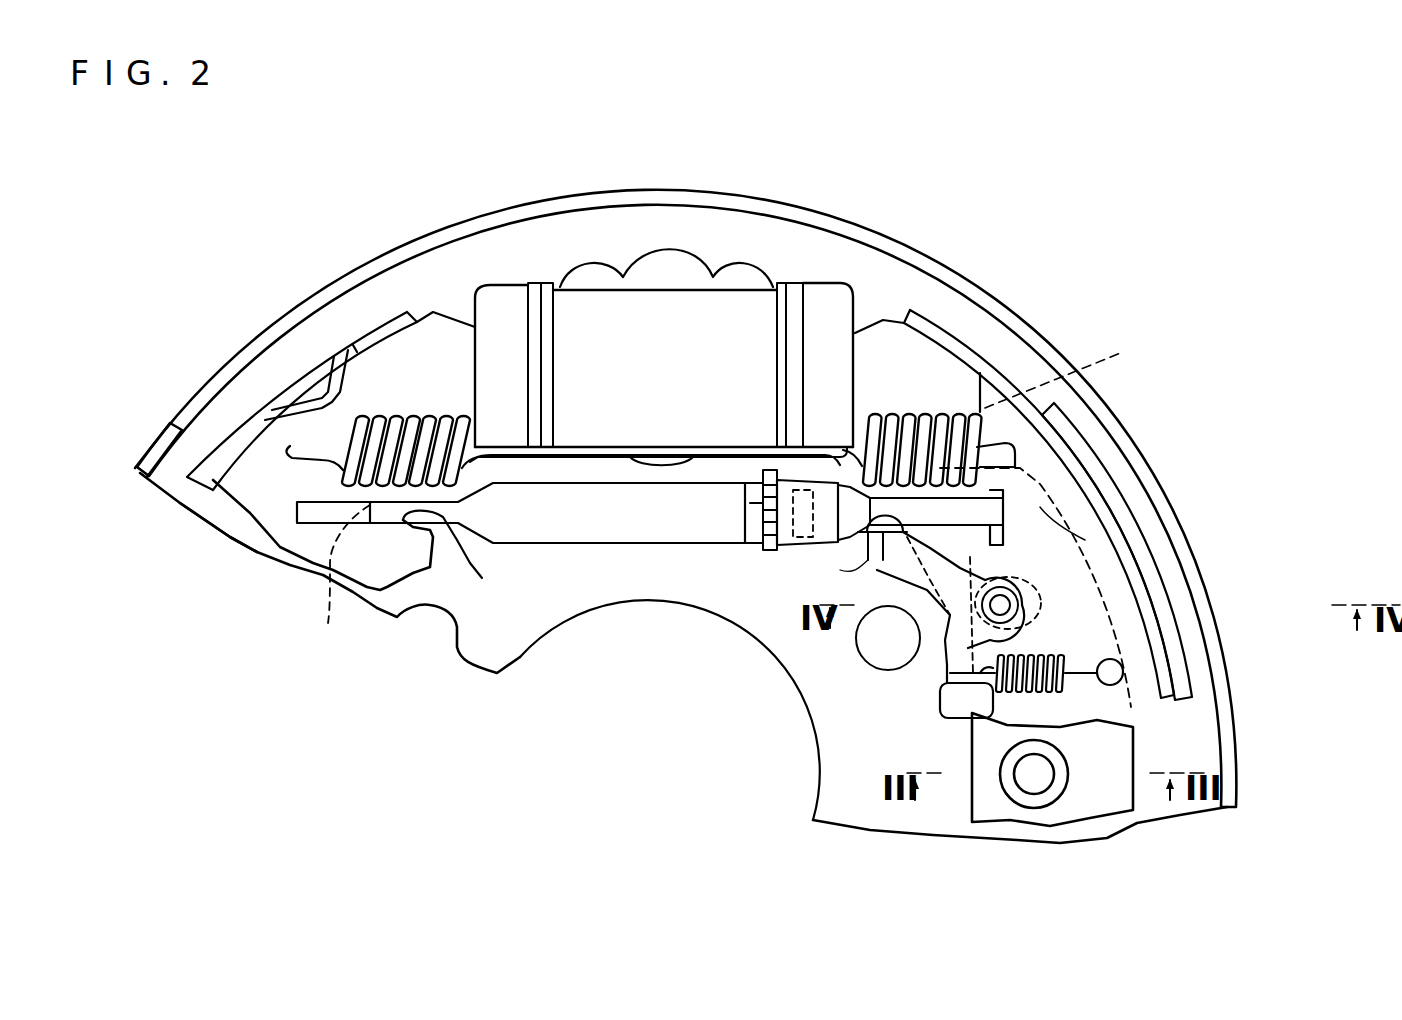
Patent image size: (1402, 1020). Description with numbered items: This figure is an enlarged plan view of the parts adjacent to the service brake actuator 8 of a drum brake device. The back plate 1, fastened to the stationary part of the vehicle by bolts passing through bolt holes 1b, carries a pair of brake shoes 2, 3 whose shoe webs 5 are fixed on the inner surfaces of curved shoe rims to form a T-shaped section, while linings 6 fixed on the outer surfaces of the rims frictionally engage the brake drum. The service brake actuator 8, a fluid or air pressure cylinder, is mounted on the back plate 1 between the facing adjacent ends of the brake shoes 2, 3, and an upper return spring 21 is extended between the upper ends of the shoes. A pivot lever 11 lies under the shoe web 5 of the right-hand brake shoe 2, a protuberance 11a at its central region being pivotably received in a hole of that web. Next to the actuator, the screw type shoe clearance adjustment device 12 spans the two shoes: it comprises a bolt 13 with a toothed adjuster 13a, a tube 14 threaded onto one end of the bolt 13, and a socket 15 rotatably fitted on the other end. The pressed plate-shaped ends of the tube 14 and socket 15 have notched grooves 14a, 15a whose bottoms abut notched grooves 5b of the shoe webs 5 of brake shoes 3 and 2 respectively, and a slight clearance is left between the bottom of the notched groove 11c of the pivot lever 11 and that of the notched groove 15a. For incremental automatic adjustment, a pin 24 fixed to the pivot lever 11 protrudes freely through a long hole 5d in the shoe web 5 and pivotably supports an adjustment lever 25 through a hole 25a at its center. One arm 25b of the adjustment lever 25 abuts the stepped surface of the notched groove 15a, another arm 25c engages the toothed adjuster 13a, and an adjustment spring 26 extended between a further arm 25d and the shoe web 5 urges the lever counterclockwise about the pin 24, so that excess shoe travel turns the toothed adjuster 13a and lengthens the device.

The back plate 1 is at (1045, 330).
The bolt holes 1b is at (875, 672).
The brake shoe 2 is at (1100, 445).
The brake shoe 3 is at (313, 368).
The shoe web 5 is at (232, 538).
The notched groove 5b is at (461, 556).
The long hole 5d is at (1018, 603).
The lining 6 is at (200, 442).
The service brake actuator 8 is at (637, 270).
The pivot lever 11 is at (1100, 807).
The protuberance 11a is at (1068, 774).
The notched groove 11c is at (1054, 518).
The shoe clearance adjustment device 12 is at (720, 462).
The bolt 13 is at (757, 530).
The toothed adjuster 13a is at (765, 528).
The tube 14 is at (577, 537).
The notched groove 14a is at (334, 584).
The socket 15 is at (790, 530).
The notched groove 15a is at (888, 638).
The return spring 21 is at (920, 413).
The pin 24 is at (1125, 671).
The adjustment lever 25 is at (1020, 548).
The hole 25a is at (1015, 585).
The arm 25b is at (1040, 507).
The arm 25c is at (803, 480).
The arm 25d is at (940, 705).
The adjustment spring 26 is at (1060, 696).